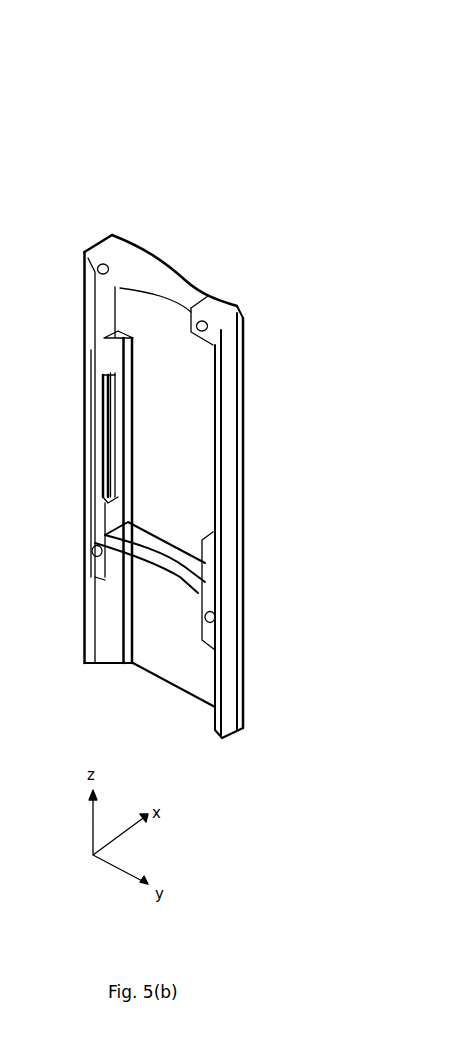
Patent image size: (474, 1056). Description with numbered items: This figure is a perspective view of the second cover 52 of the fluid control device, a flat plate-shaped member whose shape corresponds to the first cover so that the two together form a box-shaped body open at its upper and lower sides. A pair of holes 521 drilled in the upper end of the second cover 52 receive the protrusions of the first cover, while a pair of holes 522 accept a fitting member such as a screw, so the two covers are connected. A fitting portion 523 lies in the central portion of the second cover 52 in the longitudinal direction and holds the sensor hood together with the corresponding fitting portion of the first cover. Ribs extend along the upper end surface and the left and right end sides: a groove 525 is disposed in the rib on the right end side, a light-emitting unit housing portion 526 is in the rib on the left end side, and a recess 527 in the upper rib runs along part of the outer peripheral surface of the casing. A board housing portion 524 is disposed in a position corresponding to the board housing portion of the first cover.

The second cover 52 is at (291, 142).
The hole 521 is at (92, 243).
The hole 522 is at (82, 553).
The fitting portion 523 is at (185, 572).
The board housing portion 524 is at (213, 480).
The groove 525 is at (90, 412).
The light-emitting unit housing portion 526 is at (84, 304).
The recess 527 is at (163, 264).